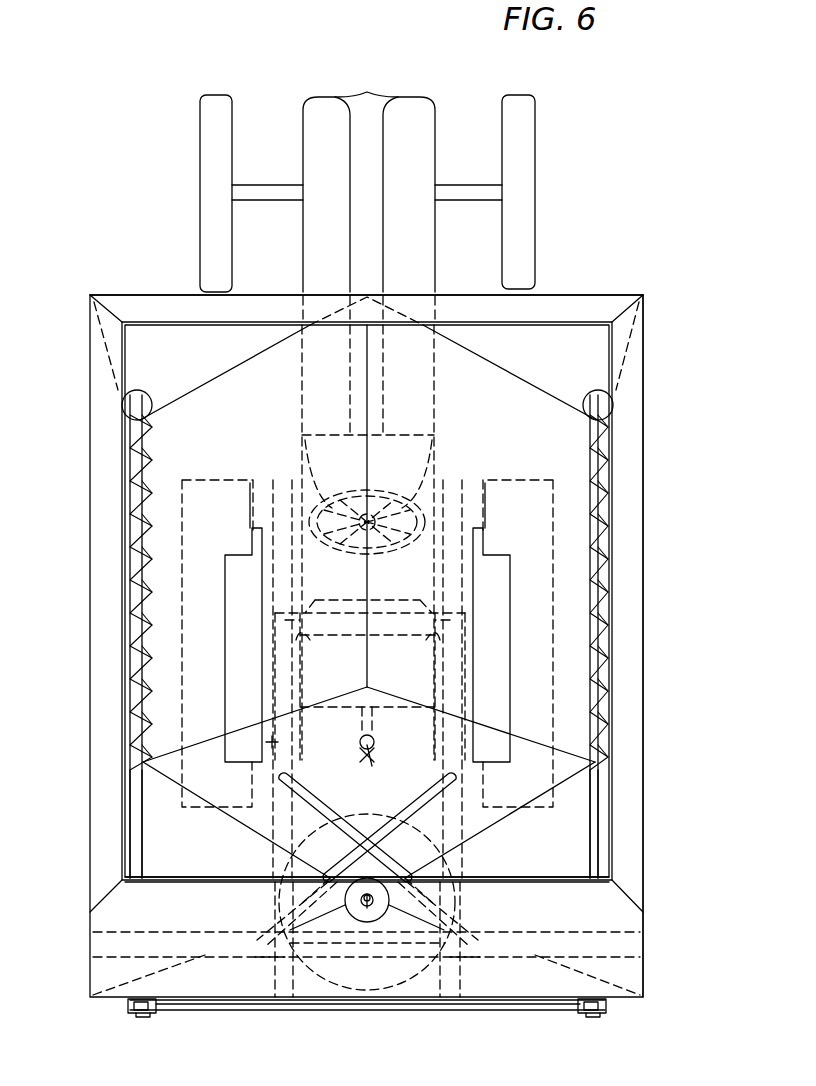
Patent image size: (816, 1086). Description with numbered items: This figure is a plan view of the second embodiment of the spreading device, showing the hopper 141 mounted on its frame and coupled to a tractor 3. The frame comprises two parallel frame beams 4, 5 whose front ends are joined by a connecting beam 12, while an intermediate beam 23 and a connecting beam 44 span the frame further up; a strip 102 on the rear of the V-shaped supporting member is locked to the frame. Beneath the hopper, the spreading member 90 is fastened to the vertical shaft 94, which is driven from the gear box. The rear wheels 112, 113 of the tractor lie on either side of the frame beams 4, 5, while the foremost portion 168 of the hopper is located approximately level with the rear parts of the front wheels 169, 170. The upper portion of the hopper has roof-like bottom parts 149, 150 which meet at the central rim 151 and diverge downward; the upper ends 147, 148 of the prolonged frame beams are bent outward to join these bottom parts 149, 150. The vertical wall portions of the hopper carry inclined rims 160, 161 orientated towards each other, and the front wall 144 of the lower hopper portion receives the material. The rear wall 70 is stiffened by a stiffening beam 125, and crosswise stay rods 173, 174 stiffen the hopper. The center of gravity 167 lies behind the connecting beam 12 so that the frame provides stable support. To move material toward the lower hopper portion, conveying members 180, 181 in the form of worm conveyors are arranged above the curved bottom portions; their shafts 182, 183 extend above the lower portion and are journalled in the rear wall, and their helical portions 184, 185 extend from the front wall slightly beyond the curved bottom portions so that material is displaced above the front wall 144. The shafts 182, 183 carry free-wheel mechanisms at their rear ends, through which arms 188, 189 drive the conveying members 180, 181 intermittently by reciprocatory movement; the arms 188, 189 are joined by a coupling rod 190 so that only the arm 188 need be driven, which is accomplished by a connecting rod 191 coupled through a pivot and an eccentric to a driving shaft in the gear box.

The tractor 3 is at (305, 228).
The frame beam 4 is at (262, 966).
The frame beam 5 is at (462, 968).
The connecting beam 12 is at (440, 612).
The intermediate beam 23 is at (458, 848).
The connecting beam 44 is at (282, 830).
The rear wall 70 is at (200, 890).
The spreading member 90 is at (236, 908).
The shaft 94 is at (356, 930).
The strip 102 is at (352, 744).
The rear wheel 112 is at (250, 478).
The rear wheel 113 is at (494, 478).
The stiffening beam 125 is at (540, 935).
The hopper 141 is at (112, 1002).
The front wall 144 is at (212, 752).
The upper end 147 is at (270, 740).
The upper end 148 is at (464, 742).
The bottom part 149 is at (346, 682).
The bottom part 150 is at (376, 656).
The rim 151 is at (358, 585).
The inclined rim 160 is at (96, 806).
The inclined rim 161 is at (640, 718).
The center of gravity 167 is at (376, 750).
The foremost portion 168 is at (160, 282).
The front wheel 169 is at (198, 142).
The front wheel 170 is at (525, 232).
The stay rod 173 is at (432, 796).
The stay rod 174 is at (308, 798).
The conveying member 180 is at (180, 444).
The conveying member 181 is at (555, 440).
The shaft 182 is at (142, 850).
The shaft 183 is at (598, 864).
The helical portion 184 is at (165, 484).
The helical portion 185 is at (578, 484).
The arm 188 is at (134, 1014).
The arm 189 is at (606, 1006).
The coupling rod 190 is at (266, 1008).
The connecting rod 191 is at (170, 1000).